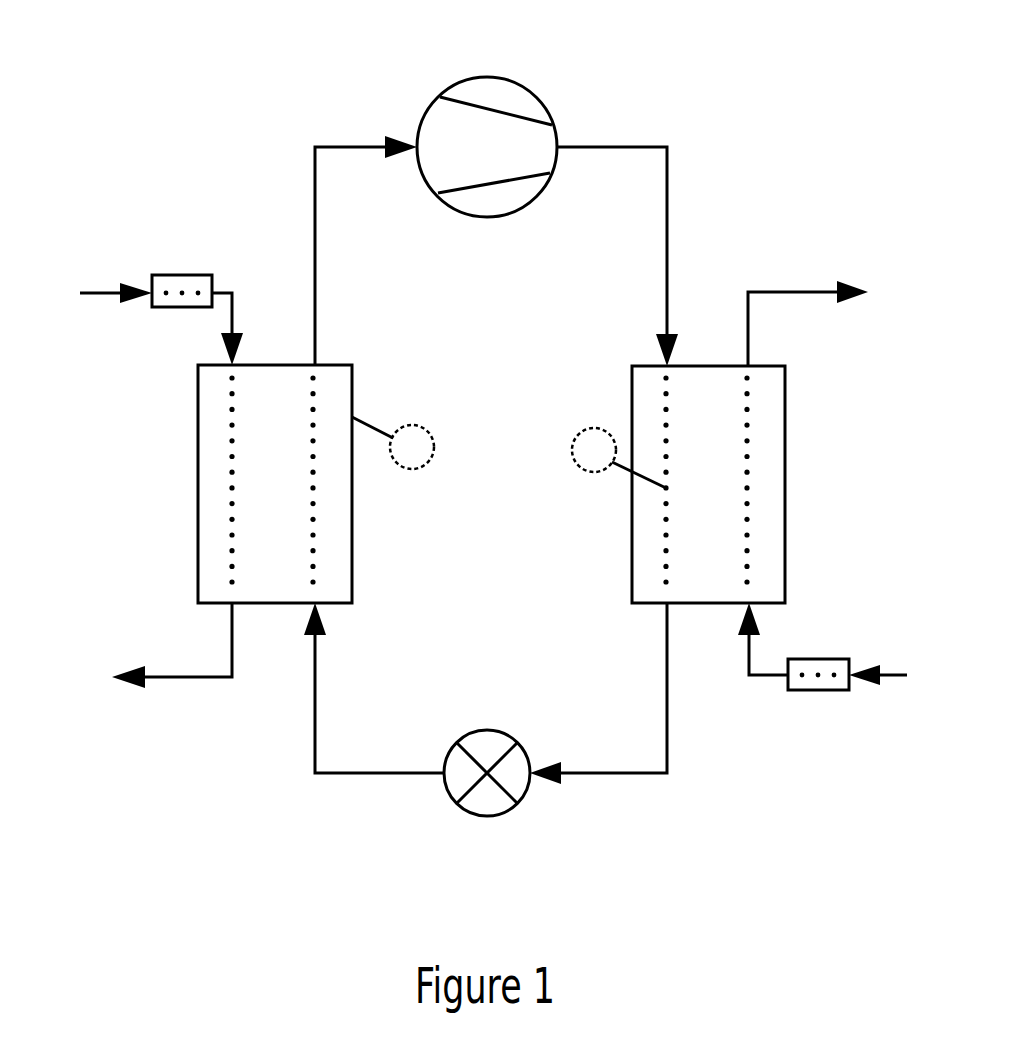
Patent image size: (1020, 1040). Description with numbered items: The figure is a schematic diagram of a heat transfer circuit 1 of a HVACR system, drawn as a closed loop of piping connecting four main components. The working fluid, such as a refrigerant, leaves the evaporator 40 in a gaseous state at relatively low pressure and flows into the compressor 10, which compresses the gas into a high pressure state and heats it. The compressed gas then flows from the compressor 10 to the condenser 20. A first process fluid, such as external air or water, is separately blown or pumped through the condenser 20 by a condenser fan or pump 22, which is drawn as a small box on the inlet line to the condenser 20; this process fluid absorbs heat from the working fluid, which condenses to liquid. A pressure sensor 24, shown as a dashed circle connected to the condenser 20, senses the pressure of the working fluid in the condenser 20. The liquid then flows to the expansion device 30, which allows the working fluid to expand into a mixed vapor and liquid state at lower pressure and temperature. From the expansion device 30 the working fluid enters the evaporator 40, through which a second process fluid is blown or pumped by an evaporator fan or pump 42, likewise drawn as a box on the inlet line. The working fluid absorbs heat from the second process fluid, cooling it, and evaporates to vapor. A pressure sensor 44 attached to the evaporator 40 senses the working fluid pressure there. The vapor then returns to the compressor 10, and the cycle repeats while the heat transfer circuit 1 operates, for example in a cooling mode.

The heat transfer circuit 1 is at (222, 216).
The compressor 10 is at (470, 77).
The condenser 20 is at (786, 422).
The condenser fan or pump 22 is at (813, 692).
The pressure sensor 24 is at (585, 431).
The expansion device 30 is at (527, 790).
The evaporator 40 is at (198, 423).
The evaporator fan or pump 42 is at (182, 308).
The pressure sensor 44 is at (410, 425).